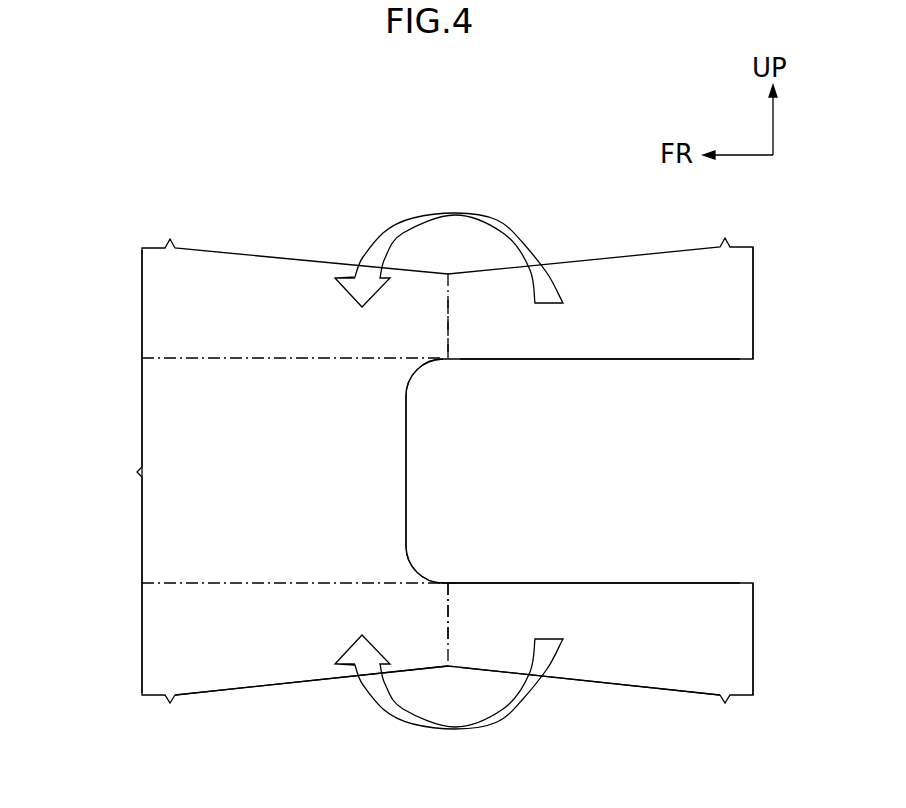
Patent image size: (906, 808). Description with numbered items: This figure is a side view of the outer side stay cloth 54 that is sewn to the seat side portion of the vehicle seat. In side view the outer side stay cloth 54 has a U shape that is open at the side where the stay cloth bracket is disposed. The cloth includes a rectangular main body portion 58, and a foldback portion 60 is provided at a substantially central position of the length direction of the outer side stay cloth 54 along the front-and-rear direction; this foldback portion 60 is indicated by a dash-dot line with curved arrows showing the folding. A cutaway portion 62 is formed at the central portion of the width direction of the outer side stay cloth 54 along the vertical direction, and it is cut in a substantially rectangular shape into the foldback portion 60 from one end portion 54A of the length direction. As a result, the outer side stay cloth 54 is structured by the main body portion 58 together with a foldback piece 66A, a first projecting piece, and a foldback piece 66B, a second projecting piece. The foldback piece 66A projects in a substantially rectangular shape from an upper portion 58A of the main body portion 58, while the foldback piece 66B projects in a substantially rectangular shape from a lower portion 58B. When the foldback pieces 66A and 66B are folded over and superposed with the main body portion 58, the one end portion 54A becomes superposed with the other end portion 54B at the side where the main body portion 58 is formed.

The outer side stay cloth 54 is at (770, 435).
The one end portion 54A is at (743, 300).
The another end portion 54B is at (155, 515).
The main body portion 58 is at (258, 670).
The upper portion 58A is at (432, 306).
The lower portion 58B is at (433, 639).
The foldback portion 60 is at (447, 318).
The cutaway portion 62 is at (612, 582).
The foldback piece 66A is at (663, 348).
The foldback piece 66B is at (665, 675).